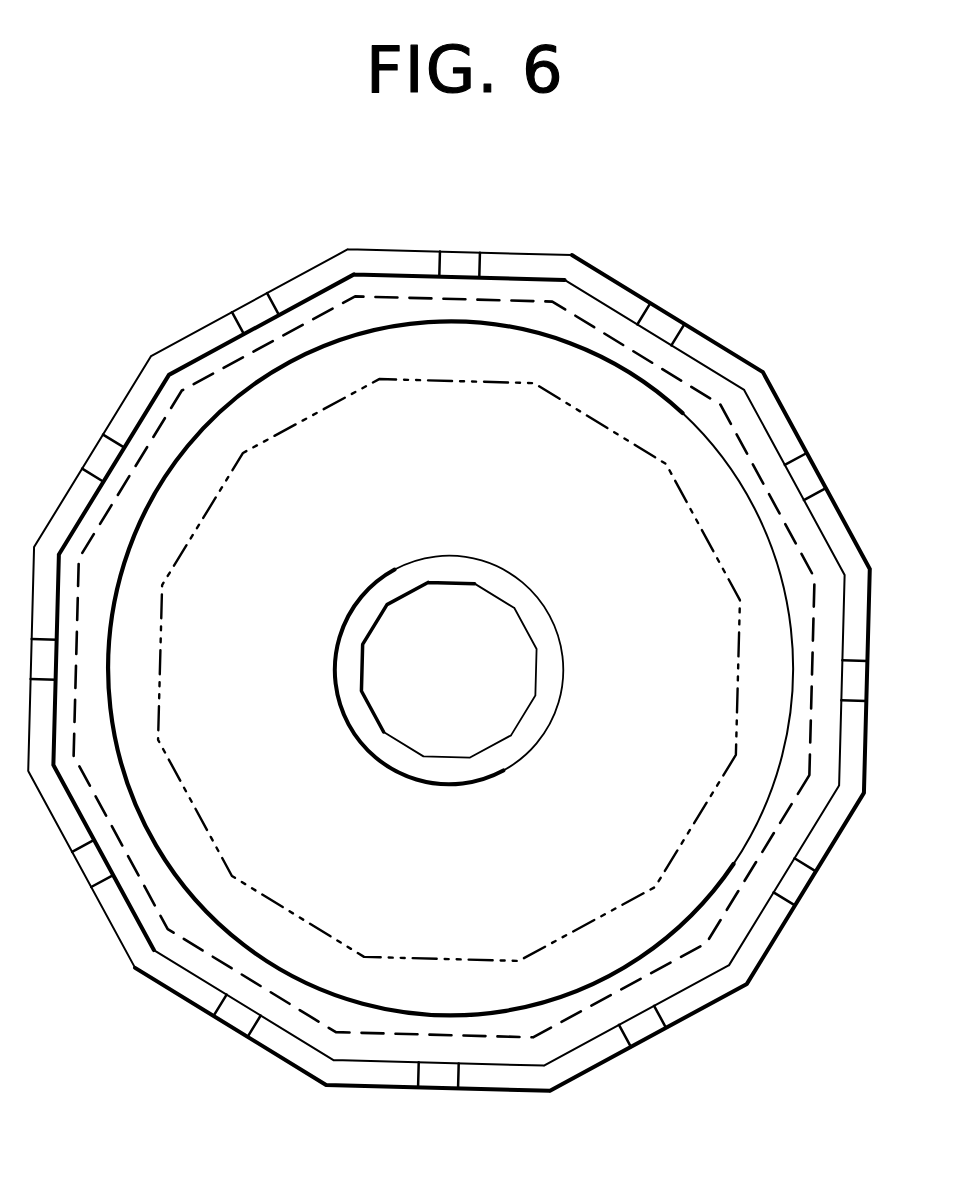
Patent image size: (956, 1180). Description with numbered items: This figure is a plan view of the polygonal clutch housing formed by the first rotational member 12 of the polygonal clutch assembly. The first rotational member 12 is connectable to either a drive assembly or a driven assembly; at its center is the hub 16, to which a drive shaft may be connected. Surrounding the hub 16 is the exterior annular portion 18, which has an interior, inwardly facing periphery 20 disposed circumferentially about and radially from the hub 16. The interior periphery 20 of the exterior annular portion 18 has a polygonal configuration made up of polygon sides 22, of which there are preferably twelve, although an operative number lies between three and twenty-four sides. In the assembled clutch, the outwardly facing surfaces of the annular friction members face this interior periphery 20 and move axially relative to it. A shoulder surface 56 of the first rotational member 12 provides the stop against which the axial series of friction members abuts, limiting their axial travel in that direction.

The first rotational member 12 is at (717, 320).
The hub 16 is at (533, 619).
The exterior annular portion 18 is at (381, 256).
The interior periphery 20 is at (128, 902).
The polygon sides 22 is at (144, 408).
The shoulder surface 56 is at (841, 638).